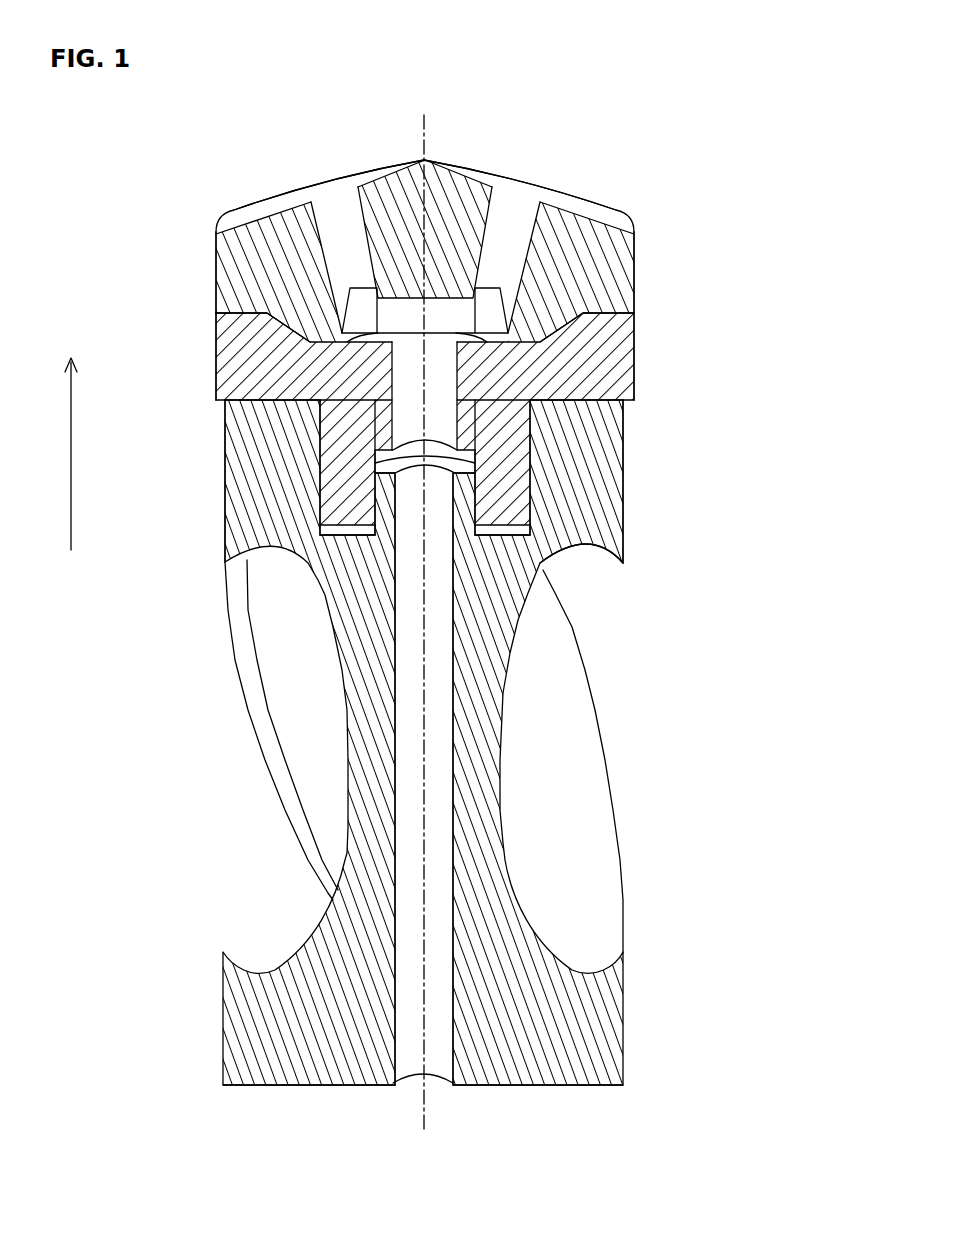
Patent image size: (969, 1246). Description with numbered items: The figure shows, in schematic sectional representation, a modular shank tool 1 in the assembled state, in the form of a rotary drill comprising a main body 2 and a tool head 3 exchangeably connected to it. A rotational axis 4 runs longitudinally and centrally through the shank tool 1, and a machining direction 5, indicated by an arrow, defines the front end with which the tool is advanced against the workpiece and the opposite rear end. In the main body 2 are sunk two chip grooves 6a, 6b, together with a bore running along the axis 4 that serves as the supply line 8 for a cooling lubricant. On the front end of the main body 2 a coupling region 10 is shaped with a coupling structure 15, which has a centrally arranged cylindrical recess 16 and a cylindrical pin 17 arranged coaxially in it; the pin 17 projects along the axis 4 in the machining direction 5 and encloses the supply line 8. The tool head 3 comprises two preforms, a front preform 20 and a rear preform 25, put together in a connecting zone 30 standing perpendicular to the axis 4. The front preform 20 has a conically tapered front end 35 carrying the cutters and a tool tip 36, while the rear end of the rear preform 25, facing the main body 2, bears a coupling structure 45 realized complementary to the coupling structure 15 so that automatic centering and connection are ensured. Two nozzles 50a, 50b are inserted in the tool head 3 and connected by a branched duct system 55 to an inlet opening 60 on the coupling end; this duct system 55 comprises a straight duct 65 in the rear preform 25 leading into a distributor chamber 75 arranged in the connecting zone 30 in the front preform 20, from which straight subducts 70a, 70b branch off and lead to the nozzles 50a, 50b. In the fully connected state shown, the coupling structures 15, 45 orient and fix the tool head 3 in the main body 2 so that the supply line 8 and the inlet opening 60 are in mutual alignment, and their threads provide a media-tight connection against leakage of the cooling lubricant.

The modular shank tool 1 is at (712, 92).
The main body 2 is at (627, 537).
The tool head 3 is at (590, 200).
The axis 4 is at (427, 135).
The machining direction 5 is at (71, 442).
The chip groove 6a is at (315, 725).
The chip groove 6b is at (570, 712).
The supply line 8 is at (437, 1057).
The coupling region 10 is at (648, 442).
The coupling structure 15 is at (545, 572).
The cylindrical recess 16 is at (375, 538).
The cylindrical pin 17 is at (387, 503).
The front preform 20 is at (635, 257).
The rear preform 25 is at (635, 367).
The connecting zone 30 is at (585, 300).
The front end 35 is at (465, 135).
The tool tip 36 is at (425, 160).
The coupling structure 45 is at (513, 505).
The nozzle 50a is at (330, 220).
The nozzle 50b is at (510, 205).
The branched duct system 55 is at (410, 370).
The inlet opening 60 is at (422, 437).
The straight duct 65 is at (410, 395).
The subduct 70a is at (317, 192).
The subduct 70b is at (545, 198).
The distributor chamber 75 is at (400, 323).